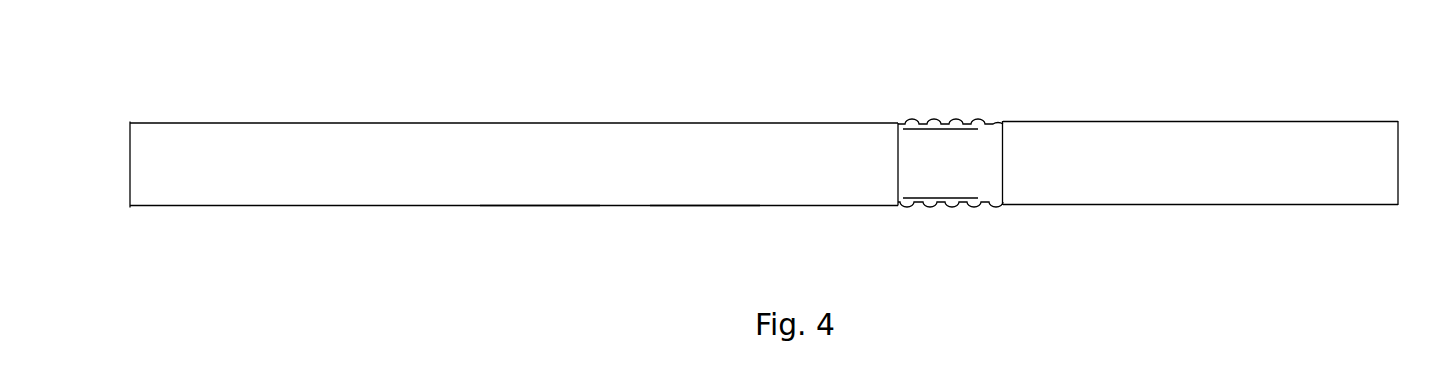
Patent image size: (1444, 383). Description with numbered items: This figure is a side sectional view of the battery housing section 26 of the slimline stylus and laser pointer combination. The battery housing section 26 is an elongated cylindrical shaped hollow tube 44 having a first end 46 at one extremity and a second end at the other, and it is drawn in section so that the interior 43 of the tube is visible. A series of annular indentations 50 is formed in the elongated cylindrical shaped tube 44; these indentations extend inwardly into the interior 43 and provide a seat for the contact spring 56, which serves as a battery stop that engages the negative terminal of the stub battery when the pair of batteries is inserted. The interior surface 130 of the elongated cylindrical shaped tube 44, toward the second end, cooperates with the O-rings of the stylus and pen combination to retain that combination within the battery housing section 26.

The interior 43 is at (395, 176).
The first end 46 is at (123, 181).
The battery housing section 26 is at (540, 209).
The elongated cylindrical shaped hollow tube 44 is at (705, 210).
The annular indentations 50 is at (899, 150).
The interior surface 130 is at (1254, 196).
The contact spring 56 is at (1400, 149).